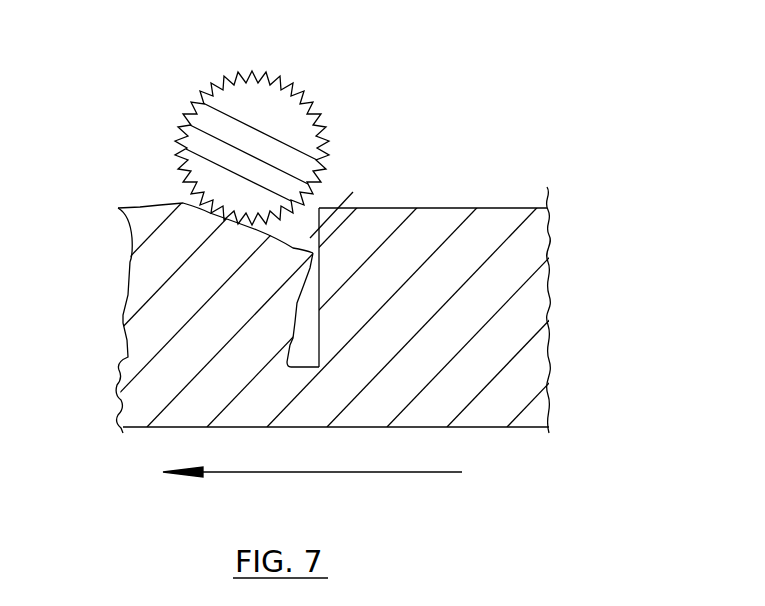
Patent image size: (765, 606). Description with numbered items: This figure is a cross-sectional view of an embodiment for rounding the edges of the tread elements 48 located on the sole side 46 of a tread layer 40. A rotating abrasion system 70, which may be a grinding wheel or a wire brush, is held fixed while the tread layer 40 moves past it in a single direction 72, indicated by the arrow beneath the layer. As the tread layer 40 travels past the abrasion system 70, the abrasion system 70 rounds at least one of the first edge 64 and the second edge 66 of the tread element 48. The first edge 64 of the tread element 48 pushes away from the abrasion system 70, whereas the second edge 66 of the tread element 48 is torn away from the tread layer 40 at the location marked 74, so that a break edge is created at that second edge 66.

The tread layer 40 is at (470, 292).
The sole side 46 is at (523, 208).
The tread element 48 is at (293, 353).
The first edge 64 is at (310, 257).
The second edge 66 is at (322, 207).
The rotating abrasion system 70 is at (313, 78).
The single direction 72 is at (337, 473).
The tearing location 74 is at (347, 202).